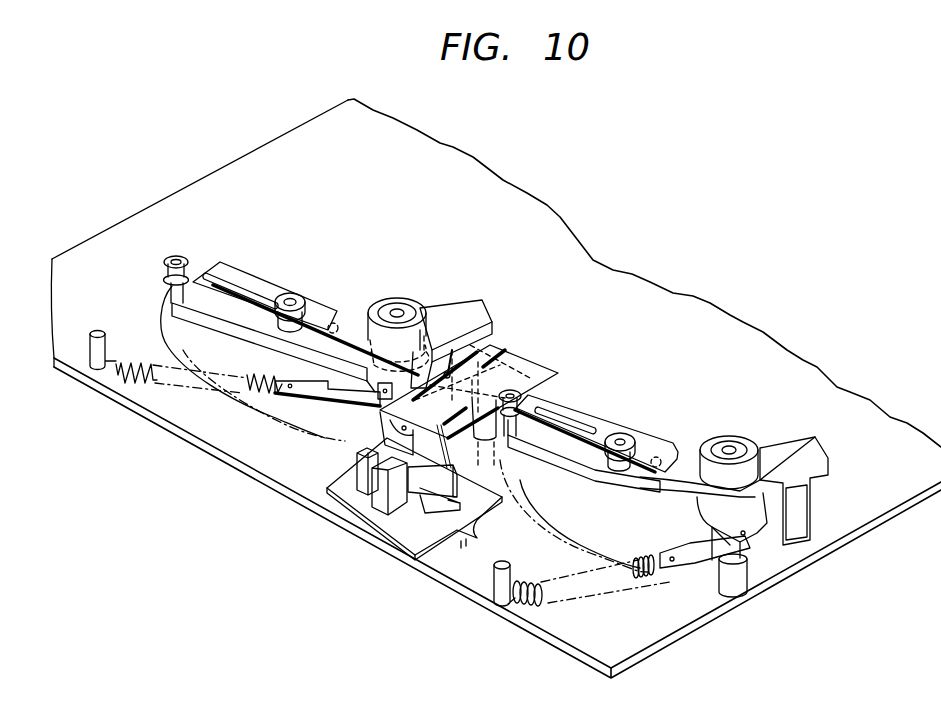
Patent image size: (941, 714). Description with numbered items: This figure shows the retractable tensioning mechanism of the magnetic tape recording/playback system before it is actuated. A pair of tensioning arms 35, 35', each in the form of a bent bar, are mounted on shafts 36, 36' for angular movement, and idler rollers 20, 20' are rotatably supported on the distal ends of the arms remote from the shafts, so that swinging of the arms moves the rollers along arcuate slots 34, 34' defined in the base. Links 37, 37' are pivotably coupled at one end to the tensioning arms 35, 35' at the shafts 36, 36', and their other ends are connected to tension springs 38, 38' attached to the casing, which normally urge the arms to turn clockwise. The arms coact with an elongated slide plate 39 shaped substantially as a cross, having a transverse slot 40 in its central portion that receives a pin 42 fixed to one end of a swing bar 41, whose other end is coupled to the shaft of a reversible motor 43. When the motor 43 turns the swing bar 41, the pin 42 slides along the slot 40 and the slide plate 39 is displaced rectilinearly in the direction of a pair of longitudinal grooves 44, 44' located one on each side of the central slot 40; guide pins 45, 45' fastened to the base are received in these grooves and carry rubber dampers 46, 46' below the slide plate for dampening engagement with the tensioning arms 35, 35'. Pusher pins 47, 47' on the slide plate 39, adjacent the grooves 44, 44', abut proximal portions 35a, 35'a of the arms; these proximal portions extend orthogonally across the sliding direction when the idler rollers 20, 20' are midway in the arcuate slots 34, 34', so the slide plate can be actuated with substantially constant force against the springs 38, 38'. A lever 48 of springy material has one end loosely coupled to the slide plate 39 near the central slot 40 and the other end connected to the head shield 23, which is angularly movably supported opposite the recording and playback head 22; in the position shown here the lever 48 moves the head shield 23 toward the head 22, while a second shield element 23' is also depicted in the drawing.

The idler roller 20 is at (188, 265).
The idler roller 20' is at (541, 401).
The recording and playback head 22 is at (382, 502).
The head shield 23 is at (393, 497).
The block 23' is at (467, 511).
The arcuate slot 34 is at (253, 372).
The arcuate slot 34' is at (574, 516).
The tensioning arm 35 is at (273, 347).
The tensioning arm 35' is at (584, 460).
The proximal portion 35a is at (350, 330).
The proximal portion 35'a is at (734, 517).
The shaft 36 is at (400, 321).
The shaft 36' is at (740, 444).
The link 37 is at (327, 403).
The link 37' is at (705, 564).
The tension spring 38 is at (186, 375).
The tension spring 38' is at (582, 590).
The slide plate 39 is at (507, 352).
The transverse slot 40 is at (480, 352).
The swing bar 41 is at (505, 384).
The pin 42 is at (452, 350).
The reversible motor 43 is at (487, 433).
The longitudinal groove 44 is at (305, 309).
The longitudinal groove 44' is at (596, 429).
The guide pin 45 is at (296, 290).
The guide pin 45' is at (636, 432).
The rubber damper 46 is at (272, 341).
The rubber damper 46' is at (610, 481).
The pusher pin 47 is at (340, 307).
The pusher pin 47' is at (677, 443).
The lever 48 is at (445, 438).